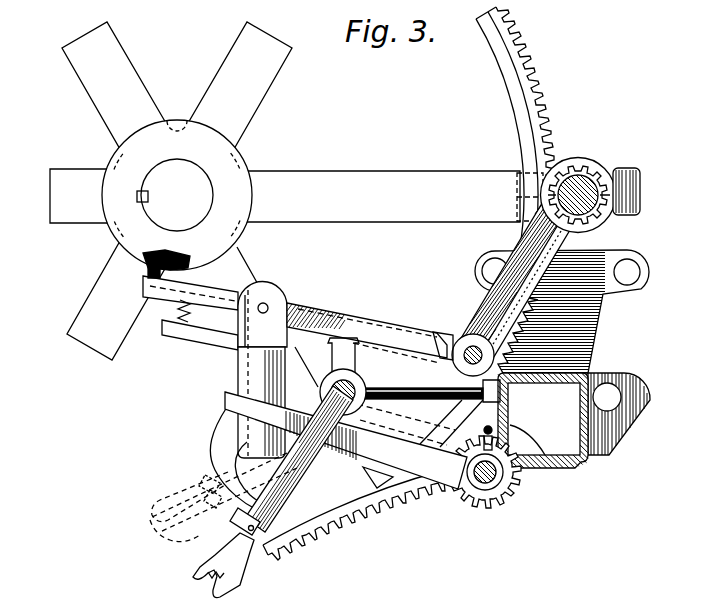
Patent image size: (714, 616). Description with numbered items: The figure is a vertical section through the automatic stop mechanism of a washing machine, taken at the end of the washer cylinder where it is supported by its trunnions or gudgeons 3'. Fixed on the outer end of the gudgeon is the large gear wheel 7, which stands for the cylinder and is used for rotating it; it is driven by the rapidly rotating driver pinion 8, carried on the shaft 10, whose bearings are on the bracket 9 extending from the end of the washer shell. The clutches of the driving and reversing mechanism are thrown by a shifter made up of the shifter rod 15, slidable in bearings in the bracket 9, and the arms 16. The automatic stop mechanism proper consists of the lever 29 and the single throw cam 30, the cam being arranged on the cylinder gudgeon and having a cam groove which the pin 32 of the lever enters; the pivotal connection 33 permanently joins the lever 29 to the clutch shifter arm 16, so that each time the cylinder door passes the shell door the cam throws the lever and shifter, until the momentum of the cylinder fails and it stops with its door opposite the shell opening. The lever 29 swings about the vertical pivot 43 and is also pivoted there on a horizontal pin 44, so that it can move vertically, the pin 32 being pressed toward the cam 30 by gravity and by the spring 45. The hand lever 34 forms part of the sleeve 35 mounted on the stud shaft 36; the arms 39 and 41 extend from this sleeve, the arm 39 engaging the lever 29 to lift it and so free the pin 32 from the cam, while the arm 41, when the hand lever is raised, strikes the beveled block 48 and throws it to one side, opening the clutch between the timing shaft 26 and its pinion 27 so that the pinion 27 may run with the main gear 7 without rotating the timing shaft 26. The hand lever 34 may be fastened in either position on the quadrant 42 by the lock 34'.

The trunnions or gudgeons 3' is at (175, 195).
The large gear wheel 7 is at (258, 84).
The driver pinion 8 is at (588, 165).
The bracket 9 is at (575, 458).
The shaft 10 is at (598, 208).
The shifter rod 15 is at (466, 363).
The shifter arms 16 is at (487, 317).
The timing shaft 26 is at (472, 510).
The pinion 27 is at (513, 488).
The lever 29 is at (328, 316).
The single throw cam 30 is at (232, 178).
The pin 32 is at (146, 271).
The pivotal connection 33 is at (450, 344).
The hand lever 34 is at (202, 535).
The lock 34' is at (251, 460).
The sleeve 35 is at (352, 442).
The stud shaft 36 is at (347, 383).
The arm 39 is at (333, 357).
The arm 41 is at (397, 387).
The quadrant 42 is at (214, 452).
The vertical pivot 43 is at (273, 332).
The horizontal pin 44 is at (265, 303).
The spring 45 is at (182, 335).
The beveled block 48 is at (511, 418).